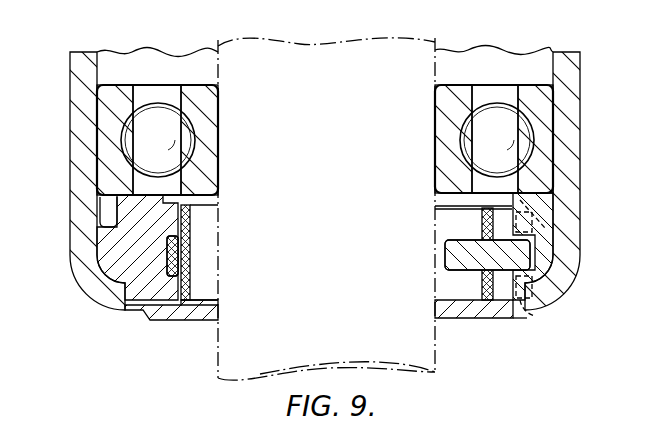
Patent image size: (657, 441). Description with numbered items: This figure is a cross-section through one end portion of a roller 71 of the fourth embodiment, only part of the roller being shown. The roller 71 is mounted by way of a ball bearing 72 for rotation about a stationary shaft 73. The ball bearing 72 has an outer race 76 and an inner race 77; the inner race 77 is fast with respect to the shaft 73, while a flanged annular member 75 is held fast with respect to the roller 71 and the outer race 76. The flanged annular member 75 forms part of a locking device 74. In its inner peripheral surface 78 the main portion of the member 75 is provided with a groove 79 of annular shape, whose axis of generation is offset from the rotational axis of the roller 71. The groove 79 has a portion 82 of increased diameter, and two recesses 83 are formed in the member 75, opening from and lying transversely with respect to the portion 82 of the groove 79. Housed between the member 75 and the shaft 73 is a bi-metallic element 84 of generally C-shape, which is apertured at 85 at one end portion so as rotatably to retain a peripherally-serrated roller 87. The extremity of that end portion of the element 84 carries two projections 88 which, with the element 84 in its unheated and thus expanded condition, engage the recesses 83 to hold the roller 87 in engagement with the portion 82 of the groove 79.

The roller 71 is at (566, 117).
The ball bearing 72 is at (500, 86).
The stationary shaft 73 is at (339, 115).
The locking device 74 is at (487, 310).
The flanged annular member 75 is at (104, 218).
The outer race 76 is at (534, 100).
The inner race 77 is at (453, 97).
The inner peripheral surface 78 is at (143, 308).
The groove 79 is at (172, 257).
The portion of increased diameter 82 is at (536, 256).
The recesses 83 is at (530, 226).
The bi-metallic element 84 is at (193, 280).
The aperture 85 is at (483, 262).
The peripherally-serrated roller 87 is at (455, 257).
The projections 88 is at (540, 216).